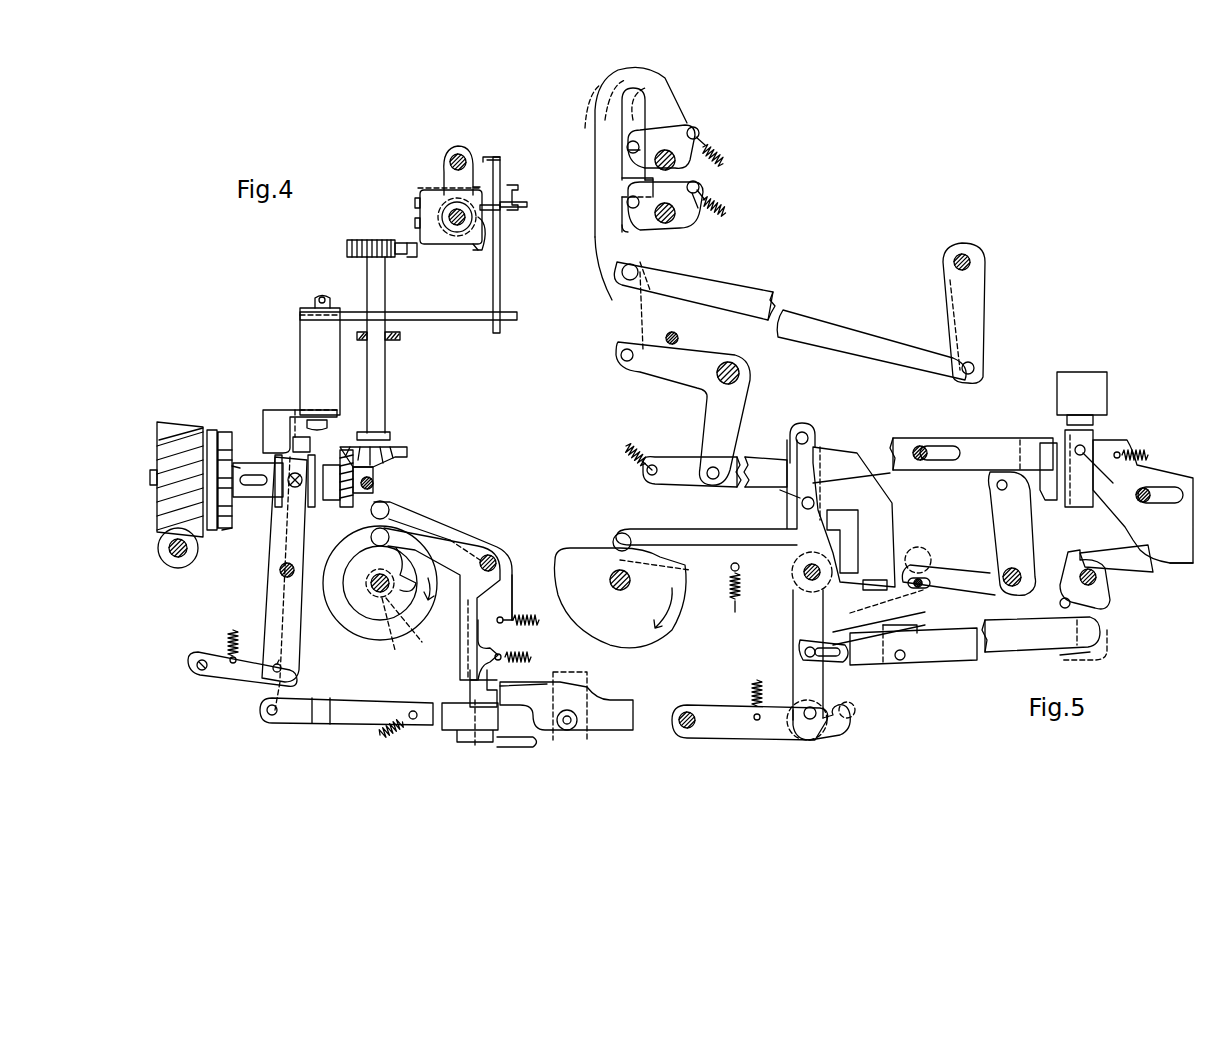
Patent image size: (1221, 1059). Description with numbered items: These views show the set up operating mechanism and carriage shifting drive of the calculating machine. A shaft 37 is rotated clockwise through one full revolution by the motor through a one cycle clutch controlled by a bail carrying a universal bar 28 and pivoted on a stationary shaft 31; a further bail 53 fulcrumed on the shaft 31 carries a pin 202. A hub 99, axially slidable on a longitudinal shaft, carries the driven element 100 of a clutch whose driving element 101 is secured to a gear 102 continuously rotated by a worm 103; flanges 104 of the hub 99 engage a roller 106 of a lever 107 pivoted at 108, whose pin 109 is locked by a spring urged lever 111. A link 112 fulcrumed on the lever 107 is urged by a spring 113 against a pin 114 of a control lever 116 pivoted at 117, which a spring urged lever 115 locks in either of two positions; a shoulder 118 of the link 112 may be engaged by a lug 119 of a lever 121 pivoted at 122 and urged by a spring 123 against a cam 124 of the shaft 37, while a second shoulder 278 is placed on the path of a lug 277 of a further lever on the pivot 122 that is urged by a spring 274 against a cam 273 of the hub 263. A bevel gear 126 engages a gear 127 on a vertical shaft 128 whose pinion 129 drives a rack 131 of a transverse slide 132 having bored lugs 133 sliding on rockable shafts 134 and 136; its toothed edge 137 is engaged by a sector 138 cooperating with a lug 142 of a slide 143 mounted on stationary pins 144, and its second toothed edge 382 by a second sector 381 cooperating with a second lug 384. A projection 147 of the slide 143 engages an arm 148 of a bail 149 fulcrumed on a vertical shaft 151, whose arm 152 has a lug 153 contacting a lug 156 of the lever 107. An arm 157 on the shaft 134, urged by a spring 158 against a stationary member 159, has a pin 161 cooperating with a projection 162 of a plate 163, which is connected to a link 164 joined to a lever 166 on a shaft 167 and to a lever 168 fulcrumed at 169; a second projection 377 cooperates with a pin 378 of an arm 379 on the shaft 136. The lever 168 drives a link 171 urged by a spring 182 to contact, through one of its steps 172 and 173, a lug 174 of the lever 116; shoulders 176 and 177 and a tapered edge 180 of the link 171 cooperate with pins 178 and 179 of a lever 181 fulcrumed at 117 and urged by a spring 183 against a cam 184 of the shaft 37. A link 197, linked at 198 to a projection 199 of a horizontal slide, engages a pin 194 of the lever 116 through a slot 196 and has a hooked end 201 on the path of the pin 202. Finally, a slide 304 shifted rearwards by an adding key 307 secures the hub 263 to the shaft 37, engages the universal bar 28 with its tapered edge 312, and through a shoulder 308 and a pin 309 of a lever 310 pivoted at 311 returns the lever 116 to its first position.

In FIG. 5, the universal bar 28 is at (1145, 560).
In FIG. 5, the stationary shaft 31 is at (1097, 580).
In FIG. 4, the shaft 37 is at (388, 590).
In FIG. 5, the shaft 37 is at (615, 570).
In FIG. 5, the bail 53 is at (1066, 570).
In FIG. 4, the hub 99 is at (242, 497).
In FIG. 4, the driven element 100 is at (228, 530).
In FIG. 4, the driving element 101 is at (212, 433).
In FIG. 4, the gear 102 is at (180, 426).
In FIG. 4, the worm 103 is at (170, 566).
In FIG. 4, the flanges 104 is at (277, 468).
In FIG. 4, the roller 106 is at (291, 485).
In FIG. 4, the lever 107 is at (275, 560).
In FIG. 4, the pivot 108 is at (281, 575).
In FIG. 4, the pin 109 is at (272, 665).
In FIG. 4, the spring urged lever 111 is at (225, 672).
In FIG. 4, the link 112 is at (348, 703).
In FIG. 4, the spring 113 is at (398, 718).
In FIG. 4, the pin 114 is at (572, 725).
In FIG. 5, the pin 114 is at (815, 718).
In FIG. 5, the spring urged lever 115 is at (727, 710).
In FIG. 4, the control member 116 is at (588, 684).
In FIG. 5, the control member 116 is at (797, 678).
In FIG. 5, the pivot 117 is at (803, 580).
In FIG. 4, the shoulder 118 is at (505, 689).
In FIG. 4, the lug 119 is at (470, 690).
In FIG. 4, the lever 121 is at (468, 548).
In FIG. 4, the pivot 122 is at (495, 560).
In FIG. 4, the spring 123 is at (530, 657).
In FIG. 4, the cam 124 is at (362, 610).
In FIG. 4, the bevel gear 126 is at (342, 507).
In FIG. 4, the bevel gear 127 is at (403, 450).
In FIG. 4, the vertical shaft 128 is at (386, 378).
In FIG. 4, the pinion 129 is at (383, 240).
In FIG. 4, the rack 131 is at (408, 257).
In FIG. 4, the transverse slide 132 is at (420, 192).
In FIG. 4, the bored lugs 133 is at (443, 175).
In FIG. 4, the shaft 134 is at (456, 227).
In FIG. 5, the shaft 134 is at (665, 224).
In FIG. 4, the shaft 136 is at (459, 153).
In FIG. 5, the shaft 136 is at (677, 165).
In FIG. 4, the bent edge 137 is at (477, 250).
In FIG. 4, the control element 138 is at (484, 233).
In FIG. 4, the lug 142 is at (490, 210).
In FIG. 4, the slide 143 is at (480, 188).
In FIG. 4, the stationary pins 144 is at (524, 207).
In FIG. 4, the projection 147 is at (500, 296).
In FIG. 4, the arm 148 is at (462, 314).
In FIG. 4, the bail 149 is at (302, 342).
In FIG. 4, the vertical shaft 151 is at (318, 298).
In FIG. 4, the arm 152 is at (296, 418).
In FIG. 4, the lug 153 is at (268, 410).
In FIG. 4, the lug 156 is at (320, 428).
In FIG. 5, the arm 157 is at (628, 220).
In FIG. 5, the spring 158 is at (722, 212).
In FIG. 5, the stationary member 159 is at (696, 210).
In FIG. 5, the pin 161 is at (627, 205).
In FIG. 5, the projection 162 is at (622, 190).
In FIG. 5, the plate 163 is at (597, 252).
In FIG. 5, the link 164 is at (805, 300).
In FIG. 5, the lever 166 is at (984, 300).
In FIG. 5, the shaft 167 is at (970, 260).
In FIG. 5, the lever 168 is at (708, 425).
In FIG. 5, the fulcrum 169 is at (740, 374).
In FIG. 5, the link 171 is at (745, 490).
In FIG. 5, the step 172 is at (900, 560).
In FIG. 5, the step 173 is at (875, 560).
In FIG. 5, the lug 174 is at (800, 610).
In FIG. 5, the shoulder 176 is at (858, 515).
In FIG. 5, the shoulder 177 is at (845, 452).
In FIG. 5, the pin 178 is at (802, 504).
In FIG. 5, the pin 179 is at (806, 438).
In FIG. 5, the tapered edge 180 is at (870, 478).
In FIG. 5, the lever 181 is at (677, 545).
In FIG. 5, the spring 182 is at (627, 453).
In FIG. 5, the spring 183 is at (733, 600).
In FIG. 5, the cam 184 is at (665, 635).
In FIG. 5, the pin 194 is at (803, 652).
In FIG. 5, the slot 196 is at (855, 655).
In FIG. 5, the intermediate member 197 is at (990, 652).
In FIG. 5, the link pivot 198 is at (905, 658).
In FIG. 5, the projection 199 is at (920, 630).
In FIG. 5, the hooked end 201 is at (1097, 625).
In FIG. 5, the pin 202 is at (1060, 603).
In FIG. 4, the hub 263 is at (393, 622).
In FIG. 4, the cam 273 is at (325, 615).
In FIG. 4, the spring 274 is at (528, 616).
In FIG. 4, the lug 277 is at (448, 703).
In FIG. 4, the second shoulder 278 is at (534, 742).
In FIG. 5, the slide 304 is at (1070, 448).
In FIG. 5, the adding key 307 is at (1085, 385).
In FIG. 5, the shoulder 308 is at (1050, 500).
In FIG. 5, the pin 309 is at (997, 486).
In FIG. 5, the lever 310 is at (972, 572).
In FIG. 5, the pivot 311 is at (1011, 587).
In FIG. 5, the tapered edge 312 is at (1185, 562).
In FIG. 5, the second projection 377 is at (685, 132).
In FIG. 5, the pin 378 is at (627, 145).
In FIG. 5, the arm 379 is at (628, 152).
In FIG. 4, the second control element 381 is at (489, 160).
In FIG. 4, the second toothed edge 382 is at (518, 193).
In FIG. 4, the second lug 384 is at (487, 157).